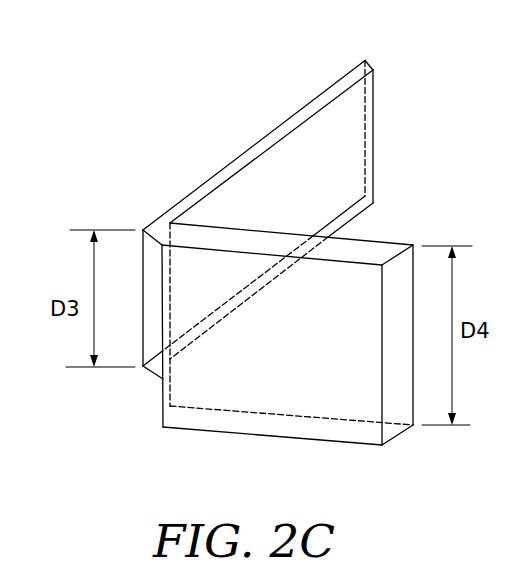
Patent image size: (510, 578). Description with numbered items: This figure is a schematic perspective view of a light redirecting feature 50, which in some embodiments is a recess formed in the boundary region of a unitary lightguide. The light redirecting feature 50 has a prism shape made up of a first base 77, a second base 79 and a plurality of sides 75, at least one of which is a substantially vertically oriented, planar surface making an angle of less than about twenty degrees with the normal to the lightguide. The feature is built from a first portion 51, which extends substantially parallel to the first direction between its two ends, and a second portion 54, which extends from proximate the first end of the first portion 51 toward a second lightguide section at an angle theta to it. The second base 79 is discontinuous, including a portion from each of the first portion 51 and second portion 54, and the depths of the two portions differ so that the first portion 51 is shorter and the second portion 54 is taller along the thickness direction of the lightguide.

The light redirecting feature 50 is at (76, 113).
The first portion 51 is at (258, 145).
The second portion 54 is at (385, 252).
The sides 75 is at (205, 178).
The first base 77 is at (313, 103).
The second base 79 is at (150, 380).